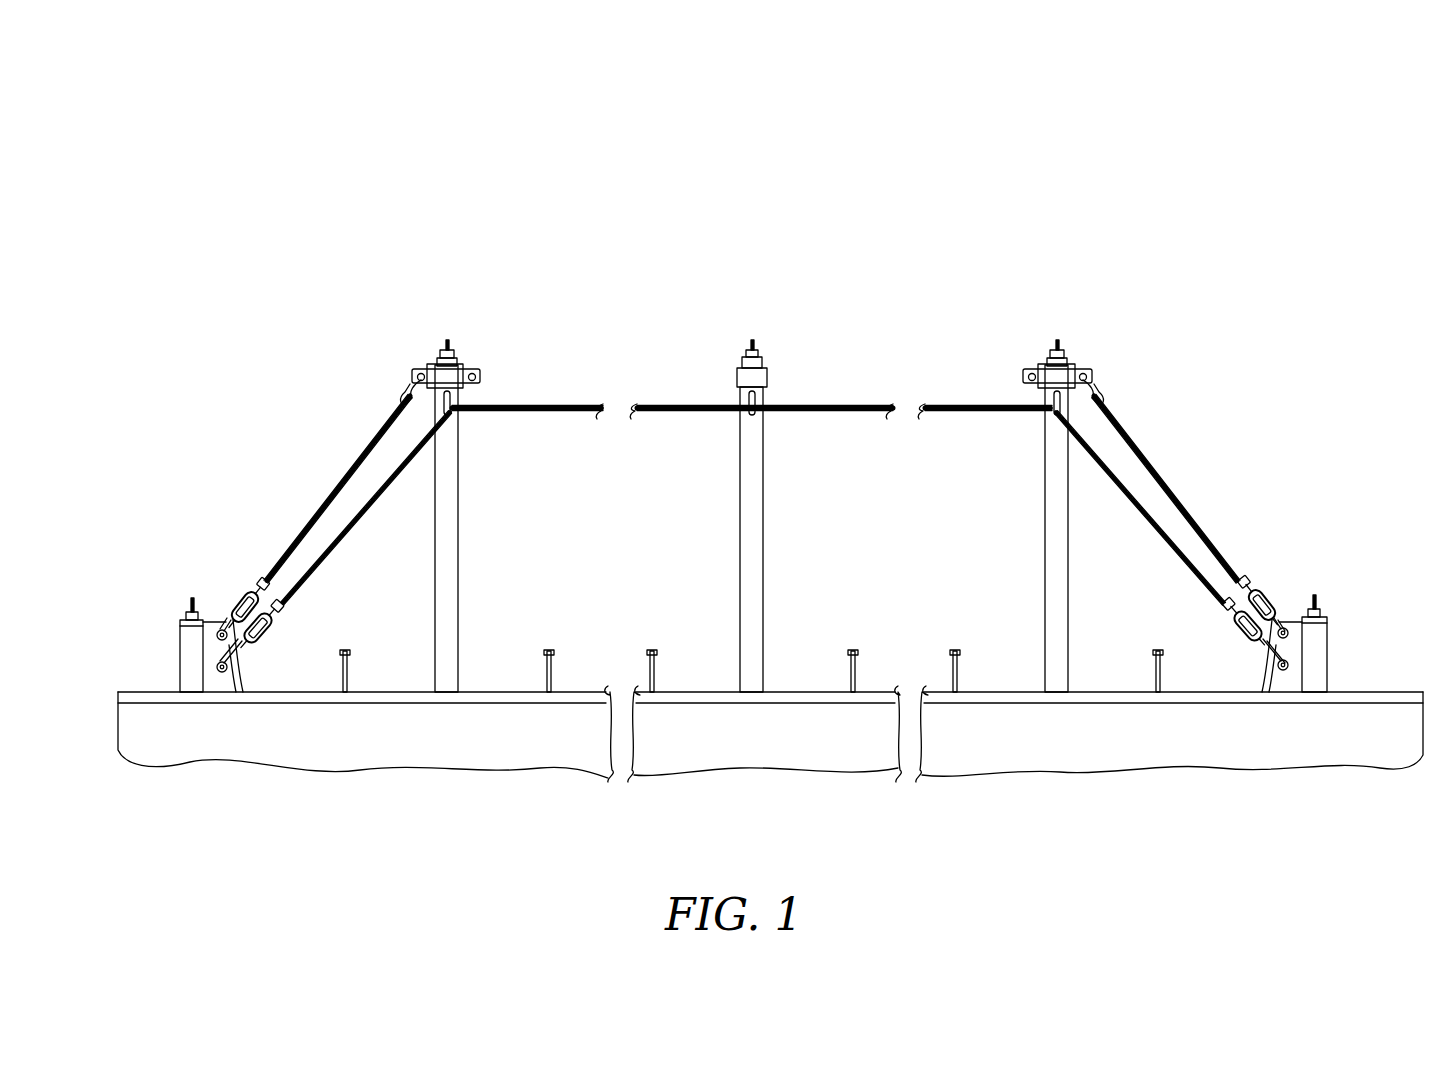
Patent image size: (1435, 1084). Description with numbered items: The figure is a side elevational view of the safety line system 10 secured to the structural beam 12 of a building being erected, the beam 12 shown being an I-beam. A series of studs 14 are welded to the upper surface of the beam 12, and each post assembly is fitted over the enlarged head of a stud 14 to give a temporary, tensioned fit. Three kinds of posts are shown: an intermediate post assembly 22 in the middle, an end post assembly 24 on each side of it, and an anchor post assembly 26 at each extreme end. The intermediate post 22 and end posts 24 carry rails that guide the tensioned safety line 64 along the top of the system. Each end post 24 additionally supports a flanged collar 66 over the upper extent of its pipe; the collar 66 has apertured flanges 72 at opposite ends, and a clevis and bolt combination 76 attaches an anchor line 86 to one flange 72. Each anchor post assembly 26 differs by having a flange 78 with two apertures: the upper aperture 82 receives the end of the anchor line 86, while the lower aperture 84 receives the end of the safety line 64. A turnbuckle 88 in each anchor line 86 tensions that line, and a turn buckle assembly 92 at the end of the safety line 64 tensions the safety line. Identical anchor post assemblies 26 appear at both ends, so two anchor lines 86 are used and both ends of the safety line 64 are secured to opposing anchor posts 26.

The safety line system 10 is at (1154, 204).
The structural beam 12 is at (464, 750).
The studs 14 is at (350, 658).
The intermediate post assembly 22 is at (788, 328).
The end post assembly 24 is at (431, 298).
The anchor post assembly 26 is at (162, 659).
The safety line 64 is at (586, 406).
The flanged collar 66 is at (1042, 366).
The apertured flanges 72 is at (419, 370).
The clevis and bolt combination 76 is at (413, 382).
The flange 78 is at (212, 690).
The upper aperture 82 is at (223, 629).
The lower aperture 84 is at (238, 692).
The anchor line 86 is at (340, 470).
The turnbuckle 88 is at (256, 590).
The turn buckle assembly 92 is at (279, 633).